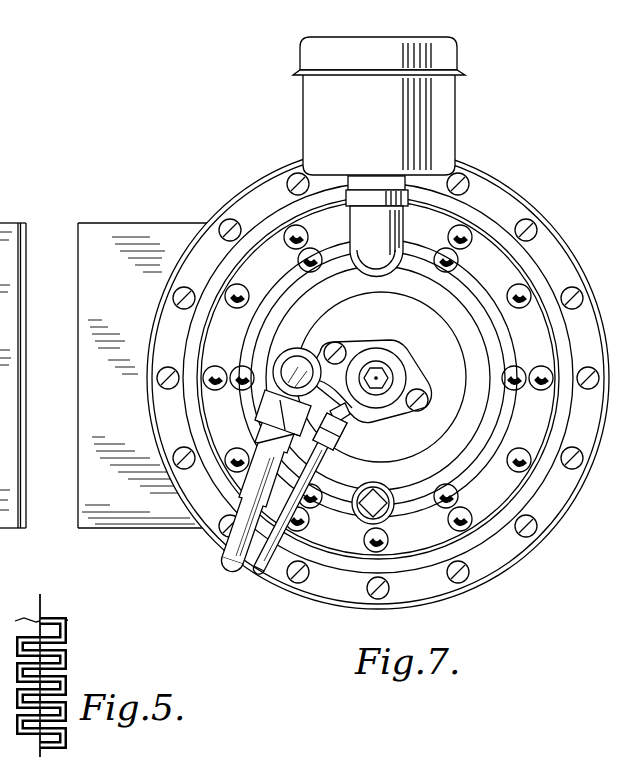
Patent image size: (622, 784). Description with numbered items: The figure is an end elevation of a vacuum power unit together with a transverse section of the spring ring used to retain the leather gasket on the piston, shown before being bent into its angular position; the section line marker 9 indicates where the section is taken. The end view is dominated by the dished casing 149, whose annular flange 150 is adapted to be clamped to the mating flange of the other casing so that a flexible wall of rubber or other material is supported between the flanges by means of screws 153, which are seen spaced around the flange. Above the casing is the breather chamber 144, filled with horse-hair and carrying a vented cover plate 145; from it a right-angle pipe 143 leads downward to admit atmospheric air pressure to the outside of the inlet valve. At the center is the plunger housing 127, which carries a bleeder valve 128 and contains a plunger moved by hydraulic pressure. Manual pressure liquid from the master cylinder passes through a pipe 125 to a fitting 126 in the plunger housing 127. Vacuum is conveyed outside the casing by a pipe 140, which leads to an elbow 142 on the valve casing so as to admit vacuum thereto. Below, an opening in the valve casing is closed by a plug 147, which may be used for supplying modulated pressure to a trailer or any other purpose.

The section line indicator 9 is at (18, 370).
The pipe 125 is at (262, 578).
The fitting 126 is at (346, 438).
The plunger housing 127 is at (386, 400).
The bleeder valve 128 is at (387, 372).
The pipe 140 is at (220, 566).
The elbow 142 is at (304, 370).
The right-angle pipe 143 is at (402, 235).
The breather chamber 144 is at (436, 125).
The vented cover plate 145 is at (447, 58).
The plug 147 is at (386, 508).
The dished casing 149 is at (533, 278).
The annular flange 150 is at (510, 202).
The screws 153 is at (226, 221).